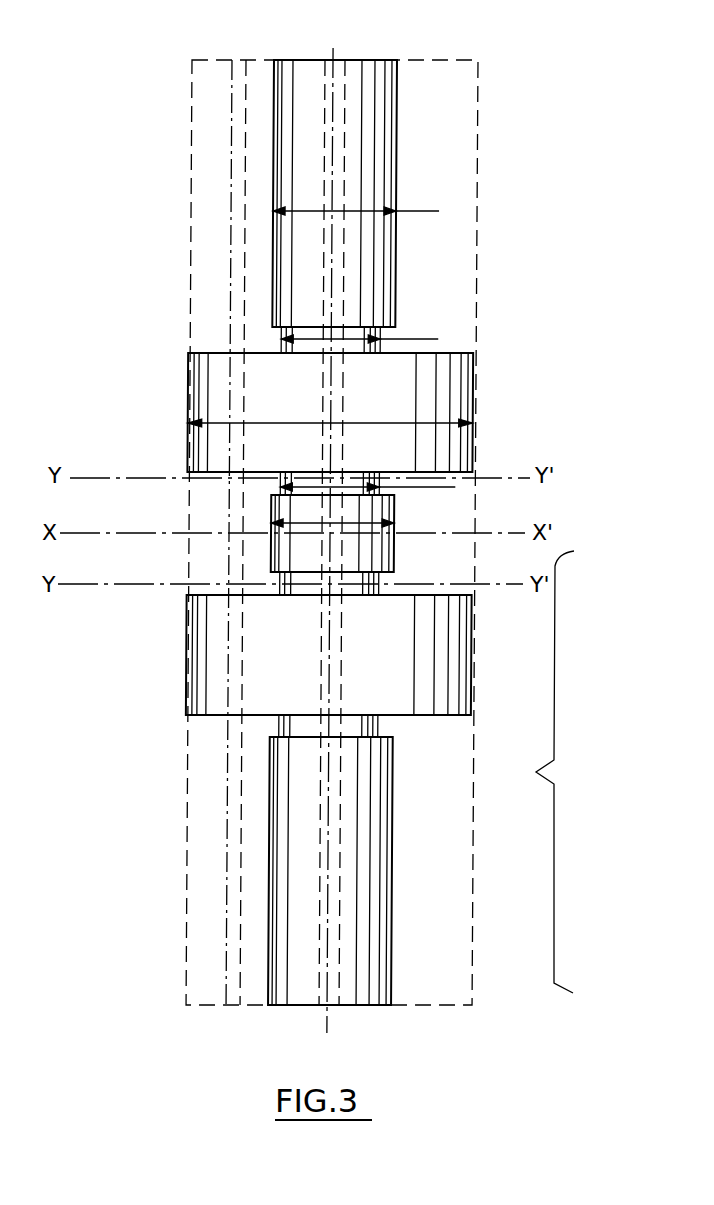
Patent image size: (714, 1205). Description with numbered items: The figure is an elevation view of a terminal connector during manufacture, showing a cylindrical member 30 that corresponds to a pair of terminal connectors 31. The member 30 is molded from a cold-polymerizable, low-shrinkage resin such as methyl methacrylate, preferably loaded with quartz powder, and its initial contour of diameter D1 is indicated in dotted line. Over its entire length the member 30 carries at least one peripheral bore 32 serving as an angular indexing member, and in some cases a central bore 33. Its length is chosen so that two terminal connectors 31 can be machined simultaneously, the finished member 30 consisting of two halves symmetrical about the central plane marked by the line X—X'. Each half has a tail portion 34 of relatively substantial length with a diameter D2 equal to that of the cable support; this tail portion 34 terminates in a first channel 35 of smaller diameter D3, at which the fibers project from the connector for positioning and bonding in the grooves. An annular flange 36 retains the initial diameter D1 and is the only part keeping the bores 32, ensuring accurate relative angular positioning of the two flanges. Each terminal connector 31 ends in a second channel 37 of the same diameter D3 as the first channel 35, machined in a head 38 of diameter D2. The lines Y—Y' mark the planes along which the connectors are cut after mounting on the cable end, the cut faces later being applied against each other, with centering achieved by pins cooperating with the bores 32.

The member 30 is at (142, 685).
The terminal connector 31 is at (566, 772).
The peripheral bore 32 is at (233, 60).
The central bore 33 is at (334, 58).
The tail portion 34 is at (288, 130).
The first channel 35 is at (285, 344).
The annular flange 36 is at (210, 397).
The second channel 37 is at (283, 481).
The head 38 is at (287, 552).